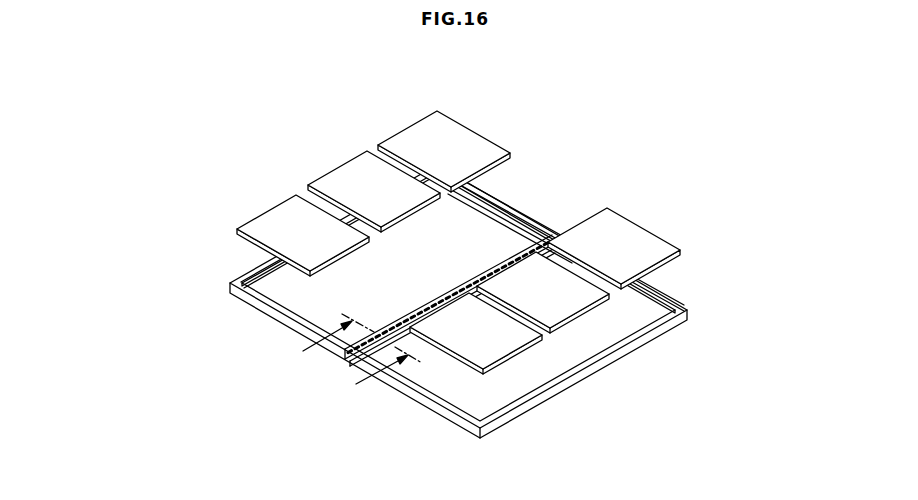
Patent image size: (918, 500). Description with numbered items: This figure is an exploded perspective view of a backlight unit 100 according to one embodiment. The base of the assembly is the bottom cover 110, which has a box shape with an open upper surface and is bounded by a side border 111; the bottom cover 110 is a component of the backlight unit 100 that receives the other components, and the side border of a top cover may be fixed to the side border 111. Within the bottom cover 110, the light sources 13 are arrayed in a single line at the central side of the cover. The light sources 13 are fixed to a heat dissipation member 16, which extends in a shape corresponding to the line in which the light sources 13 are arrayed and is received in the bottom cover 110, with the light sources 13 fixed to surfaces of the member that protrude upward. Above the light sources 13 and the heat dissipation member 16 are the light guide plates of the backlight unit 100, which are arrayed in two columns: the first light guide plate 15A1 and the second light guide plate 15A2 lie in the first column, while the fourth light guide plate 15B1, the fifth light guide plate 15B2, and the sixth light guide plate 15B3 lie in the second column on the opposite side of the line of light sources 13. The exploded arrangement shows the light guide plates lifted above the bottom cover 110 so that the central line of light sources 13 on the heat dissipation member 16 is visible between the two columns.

The backlight unit 100 is at (543, 94).
The bottom cover 110 is at (433, 413).
The side border 111 is at (487, 407).
The light sources 13 is at (473, 287).
The heat dissipation member 16 is at (393, 322).
The first light guide plate 15A1 is at (441, 125).
The second light guide plate 15A2 is at (339, 174).
The fourth light guide plate 15B1 is at (631, 236).
The fifth light guide plate 15B2 is at (567, 304).
The sixth light guide plate 15B3 is at (494, 348).